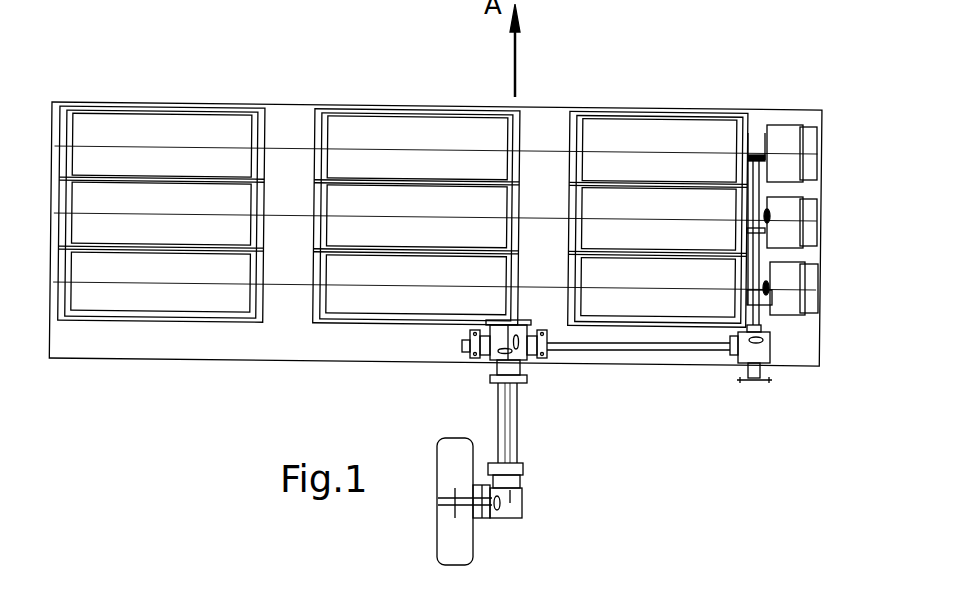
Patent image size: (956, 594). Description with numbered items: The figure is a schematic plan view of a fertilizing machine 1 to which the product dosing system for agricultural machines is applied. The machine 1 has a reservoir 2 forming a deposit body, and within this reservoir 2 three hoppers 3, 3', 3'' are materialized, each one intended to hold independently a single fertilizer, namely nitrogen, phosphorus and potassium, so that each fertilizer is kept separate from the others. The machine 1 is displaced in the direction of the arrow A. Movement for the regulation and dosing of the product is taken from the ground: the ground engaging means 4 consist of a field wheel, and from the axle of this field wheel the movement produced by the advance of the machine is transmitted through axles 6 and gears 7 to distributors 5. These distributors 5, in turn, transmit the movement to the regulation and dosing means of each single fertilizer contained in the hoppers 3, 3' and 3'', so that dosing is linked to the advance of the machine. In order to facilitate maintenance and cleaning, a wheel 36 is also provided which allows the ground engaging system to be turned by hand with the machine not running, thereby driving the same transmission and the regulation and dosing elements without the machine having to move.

The fertilizing machine 1 is at (674, 86).
The reservoir 2 is at (98, 108).
The hopper 3 is at (162, 88).
The hopper 3' is at (162, 122).
The hopper 3'' is at (187, 156).
The ground engaging means 4 is at (558, 515).
The distributors 5 is at (780, 275).
The axles 6 is at (513, 410).
The gears 7 is at (513, 348).
The wheel 36 is at (752, 383).